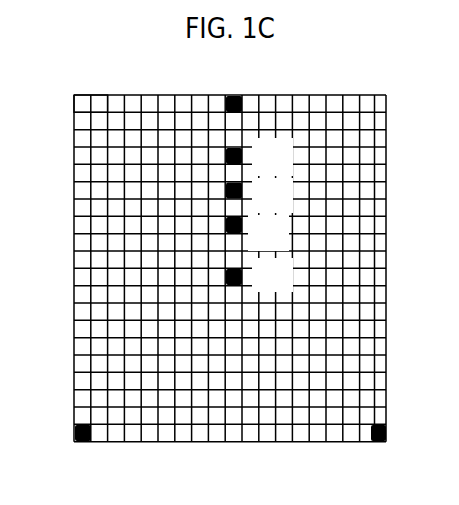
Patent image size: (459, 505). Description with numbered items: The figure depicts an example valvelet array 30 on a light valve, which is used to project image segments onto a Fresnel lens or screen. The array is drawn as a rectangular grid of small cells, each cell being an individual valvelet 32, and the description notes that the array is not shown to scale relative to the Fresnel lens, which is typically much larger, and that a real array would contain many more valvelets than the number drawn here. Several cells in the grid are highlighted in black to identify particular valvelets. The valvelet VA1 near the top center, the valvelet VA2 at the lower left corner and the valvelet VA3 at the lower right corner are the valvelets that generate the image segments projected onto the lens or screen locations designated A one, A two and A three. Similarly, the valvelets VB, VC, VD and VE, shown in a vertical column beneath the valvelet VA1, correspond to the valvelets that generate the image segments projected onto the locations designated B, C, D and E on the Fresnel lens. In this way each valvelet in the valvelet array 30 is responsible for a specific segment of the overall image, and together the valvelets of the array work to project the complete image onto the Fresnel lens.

The valvelet array 30 is at (339, 67).
The pixel cell 32 is at (100, 105).
The valvelet VA1 is at (232, 88).
The valvelet VA2 is at (67, 437).
The valvelet VA3 is at (387, 450).
The valvelet VB is at (254, 277).
The valvelet VC is at (254, 159).
The valvelet VD is at (254, 195).
The valvelet VE is at (251, 229).